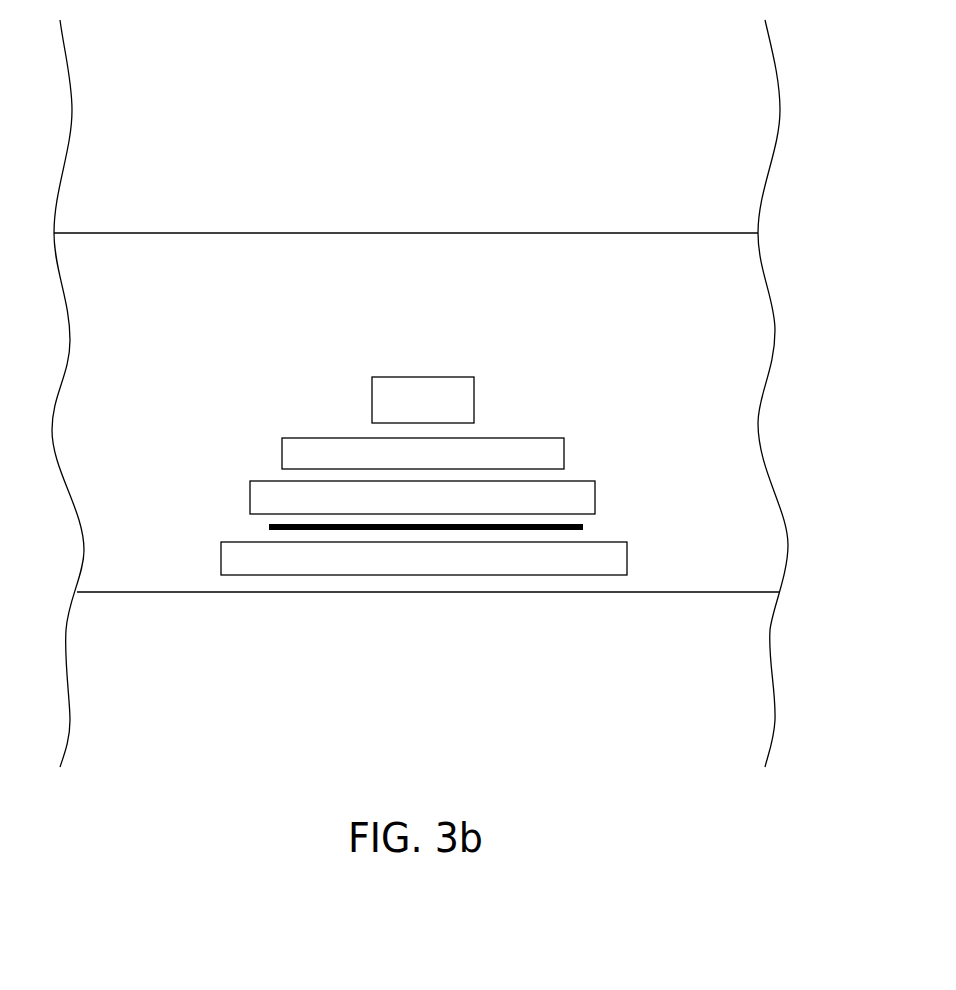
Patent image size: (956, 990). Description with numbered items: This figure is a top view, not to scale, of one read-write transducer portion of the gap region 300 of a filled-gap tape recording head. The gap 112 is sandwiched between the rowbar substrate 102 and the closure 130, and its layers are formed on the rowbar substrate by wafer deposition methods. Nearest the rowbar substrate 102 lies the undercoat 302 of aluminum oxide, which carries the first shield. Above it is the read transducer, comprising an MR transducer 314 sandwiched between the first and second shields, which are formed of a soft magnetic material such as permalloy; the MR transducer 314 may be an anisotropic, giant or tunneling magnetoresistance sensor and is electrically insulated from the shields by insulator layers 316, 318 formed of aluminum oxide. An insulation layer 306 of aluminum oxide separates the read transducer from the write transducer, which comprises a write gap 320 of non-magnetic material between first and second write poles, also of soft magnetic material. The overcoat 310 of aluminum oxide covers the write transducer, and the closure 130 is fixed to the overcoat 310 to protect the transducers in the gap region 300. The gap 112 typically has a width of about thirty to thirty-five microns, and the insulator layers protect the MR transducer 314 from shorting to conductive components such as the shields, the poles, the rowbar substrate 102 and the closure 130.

The rowbar substrate 102 is at (430, 708).
The gap 112 is at (760, 427).
The closure 130 is at (428, 126).
The gap region 300 is at (792, 663).
The undercoat 302 is at (610, 583).
The insulation layer 306 is at (555, 477).
The overcoat 310 is at (620, 338).
The MR transducer 314 is at (587, 527).
The insulator layer 316 is at (570, 535).
The insulator layer 318 is at (570, 518).
The write gap 320 is at (467, 430).